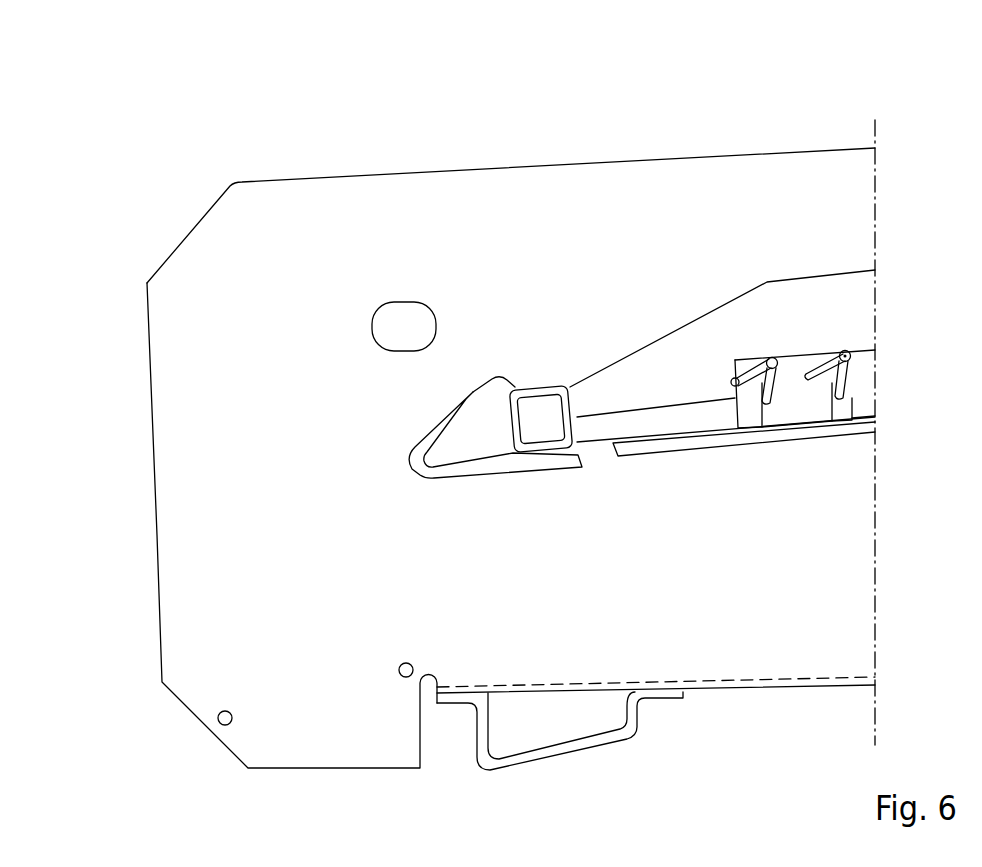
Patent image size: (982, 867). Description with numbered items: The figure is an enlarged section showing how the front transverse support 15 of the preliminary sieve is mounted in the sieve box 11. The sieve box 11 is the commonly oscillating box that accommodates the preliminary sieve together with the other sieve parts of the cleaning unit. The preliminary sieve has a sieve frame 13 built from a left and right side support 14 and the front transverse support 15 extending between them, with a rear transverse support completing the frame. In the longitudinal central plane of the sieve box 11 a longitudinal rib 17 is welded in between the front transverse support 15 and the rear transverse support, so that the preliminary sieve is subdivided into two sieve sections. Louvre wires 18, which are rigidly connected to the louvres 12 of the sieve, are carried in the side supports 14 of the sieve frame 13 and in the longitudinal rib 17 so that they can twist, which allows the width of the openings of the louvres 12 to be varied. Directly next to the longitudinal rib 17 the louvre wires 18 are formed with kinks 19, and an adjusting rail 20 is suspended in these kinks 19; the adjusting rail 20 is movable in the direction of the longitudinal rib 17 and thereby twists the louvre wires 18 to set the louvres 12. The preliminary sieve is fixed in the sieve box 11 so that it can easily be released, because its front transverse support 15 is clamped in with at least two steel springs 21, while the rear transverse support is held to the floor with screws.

The sieve box 11 is at (240, 278).
The louvres 12 is at (805, 357).
The sieve frame 13 is at (647, 427).
The side support 14 is at (647, 427).
The front transverse support 15 is at (532, 393).
The longitudinal rib 17 is at (667, 362).
The louvre wires 18 is at (848, 352).
The kinks 19 is at (840, 352).
The adjusting rail 20 is at (807, 405).
The steel springs 21 is at (548, 386).